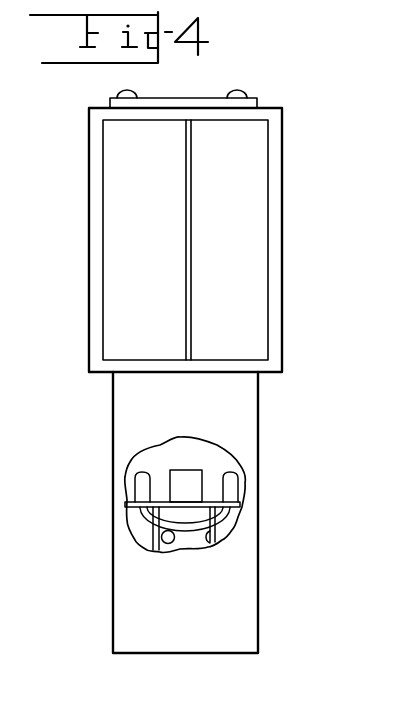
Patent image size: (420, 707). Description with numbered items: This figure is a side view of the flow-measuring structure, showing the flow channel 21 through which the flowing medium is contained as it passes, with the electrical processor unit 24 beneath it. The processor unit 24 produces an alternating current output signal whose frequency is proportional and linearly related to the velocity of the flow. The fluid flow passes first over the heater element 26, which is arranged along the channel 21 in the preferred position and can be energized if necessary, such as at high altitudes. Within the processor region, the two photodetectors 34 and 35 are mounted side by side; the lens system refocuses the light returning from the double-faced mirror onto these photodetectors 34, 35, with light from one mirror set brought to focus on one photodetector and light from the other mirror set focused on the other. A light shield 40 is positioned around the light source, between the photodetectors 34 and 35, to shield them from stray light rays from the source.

The flow channel 21 is at (90, 203).
The electrical processor unit 24 is at (258, 525).
The heater element 26 is at (191, 220).
The photodetector 34 is at (238, 462).
The photodetector 35 is at (130, 462).
The light shield 40 is at (183, 469).